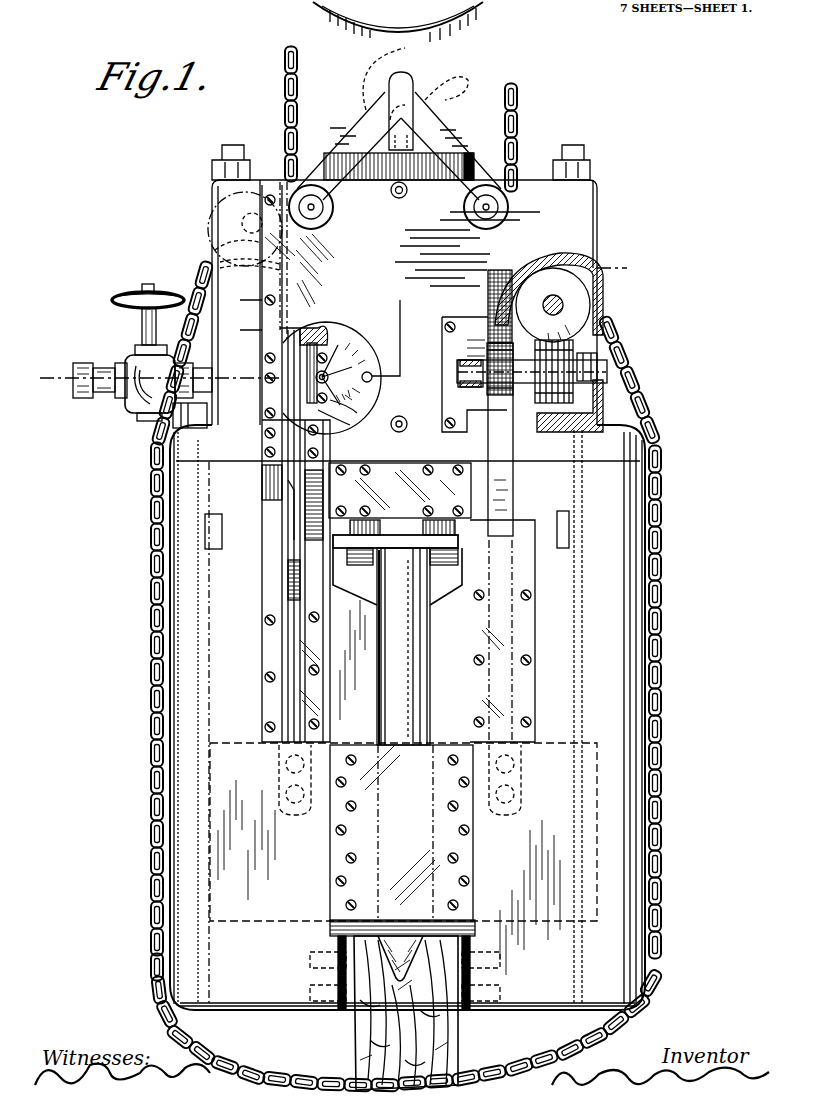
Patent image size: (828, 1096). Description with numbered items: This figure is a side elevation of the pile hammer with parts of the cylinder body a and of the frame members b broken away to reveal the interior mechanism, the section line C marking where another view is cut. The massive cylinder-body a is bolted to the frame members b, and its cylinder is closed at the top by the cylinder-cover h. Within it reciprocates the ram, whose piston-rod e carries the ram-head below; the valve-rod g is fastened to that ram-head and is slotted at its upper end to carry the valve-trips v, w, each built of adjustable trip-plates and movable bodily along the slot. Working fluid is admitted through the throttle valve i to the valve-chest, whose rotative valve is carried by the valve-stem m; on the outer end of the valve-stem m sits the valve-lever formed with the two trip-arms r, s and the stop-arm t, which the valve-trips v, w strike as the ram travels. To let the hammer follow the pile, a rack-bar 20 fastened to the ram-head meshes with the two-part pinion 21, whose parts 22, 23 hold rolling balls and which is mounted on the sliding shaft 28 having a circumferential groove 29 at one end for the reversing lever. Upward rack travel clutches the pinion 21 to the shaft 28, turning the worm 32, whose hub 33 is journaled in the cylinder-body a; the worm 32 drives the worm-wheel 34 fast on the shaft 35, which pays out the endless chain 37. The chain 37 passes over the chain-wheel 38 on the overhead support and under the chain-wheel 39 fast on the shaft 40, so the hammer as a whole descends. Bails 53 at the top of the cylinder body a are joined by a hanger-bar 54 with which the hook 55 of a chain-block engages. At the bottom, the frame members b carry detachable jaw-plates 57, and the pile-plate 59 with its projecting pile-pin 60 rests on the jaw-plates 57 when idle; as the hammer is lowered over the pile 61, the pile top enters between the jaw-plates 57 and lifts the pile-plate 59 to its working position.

The cylinder-body a is at (560, 222).
The frame members b is at (598, 585).
The section line C— C is at (332, 324).
The piston-rod e is at (400, 604).
The valve-rod g is at (262, 568).
The cylinder-cover h is at (466, 153).
The throttle valve i is at (142, 356).
The valve-stem m is at (332, 367).
The trip-arm r is at (322, 345).
The trip-arm s is at (347, 424).
The stop-arm t is at (346, 370).
The valve-trip v is at (290, 405).
The valve-trip w is at (292, 508).
The rack-bar 20 is at (512, 496).
The pinion 21 is at (487, 330).
The pinion part 22 is at (458, 358).
The pinion part 23 is at (500, 395).
The shaft 28 is at (516, 370).
The circumferential groove 29 is at (466, 388).
The worm 32 is at (610, 384).
The hub 33 is at (598, 368).
The worm-wheel 34 is at (582, 290).
The shaft 35 is at (563, 303).
The endless chain 37 is at (298, 111).
The chain-wheel 38 is at (440, 22).
The chain-wheel 39 is at (213, 211).
The shaft 40 is at (225, 238).
The bails 53 is at (360, 130).
The hanger-bar 54 is at (395, 152).
The hook 55 is at (440, 94).
The jaw-plates 57 is at (340, 975).
The pile-plate 59 is at (330, 920).
The pile-pin 60 is at (400, 934).
The pile 61 is at (445, 1042).